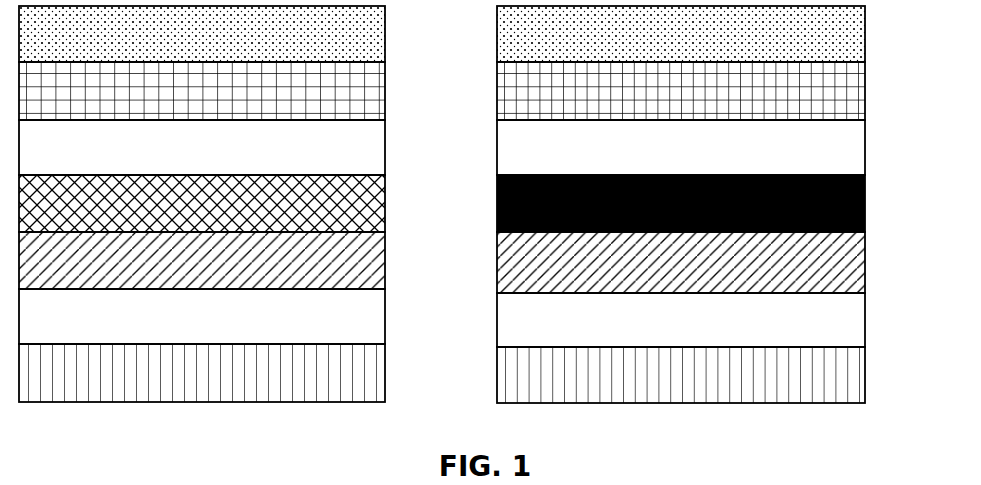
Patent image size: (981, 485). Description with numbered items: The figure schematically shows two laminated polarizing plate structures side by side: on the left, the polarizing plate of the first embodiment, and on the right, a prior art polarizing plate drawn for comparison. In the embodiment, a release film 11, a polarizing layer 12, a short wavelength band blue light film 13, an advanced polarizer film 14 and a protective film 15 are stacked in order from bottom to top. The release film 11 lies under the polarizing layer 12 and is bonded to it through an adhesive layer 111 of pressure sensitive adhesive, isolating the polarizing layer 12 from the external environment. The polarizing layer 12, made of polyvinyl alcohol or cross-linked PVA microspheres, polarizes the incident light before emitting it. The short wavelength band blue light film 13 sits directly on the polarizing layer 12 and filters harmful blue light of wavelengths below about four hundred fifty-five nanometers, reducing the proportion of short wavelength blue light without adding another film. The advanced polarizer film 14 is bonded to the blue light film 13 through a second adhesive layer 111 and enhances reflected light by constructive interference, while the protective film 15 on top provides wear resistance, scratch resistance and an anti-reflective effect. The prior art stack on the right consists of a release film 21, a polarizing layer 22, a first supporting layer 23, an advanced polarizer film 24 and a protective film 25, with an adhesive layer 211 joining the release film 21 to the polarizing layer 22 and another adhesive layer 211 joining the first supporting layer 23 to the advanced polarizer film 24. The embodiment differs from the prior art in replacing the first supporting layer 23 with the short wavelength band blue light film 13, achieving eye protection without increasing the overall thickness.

The release film 11 is at (385, 374).
The adhesive layer 111 is at (385, 148).
The polarizing layer 12 is at (385, 261).
The short wavelength band blue light film 13 is at (385, 204).
The advanced polarizer film 14 is at (385, 92).
The protective film 15 is at (385, 35).
The release film 21 is at (865, 374).
The adhesive layer 211 is at (865, 148).
The polarizing layer 22 is at (865, 261).
The first supporting layer 23 is at (865, 204).
The advanced polarizer film 24 is at (865, 92).
The protective film 25 is at (865, 35).